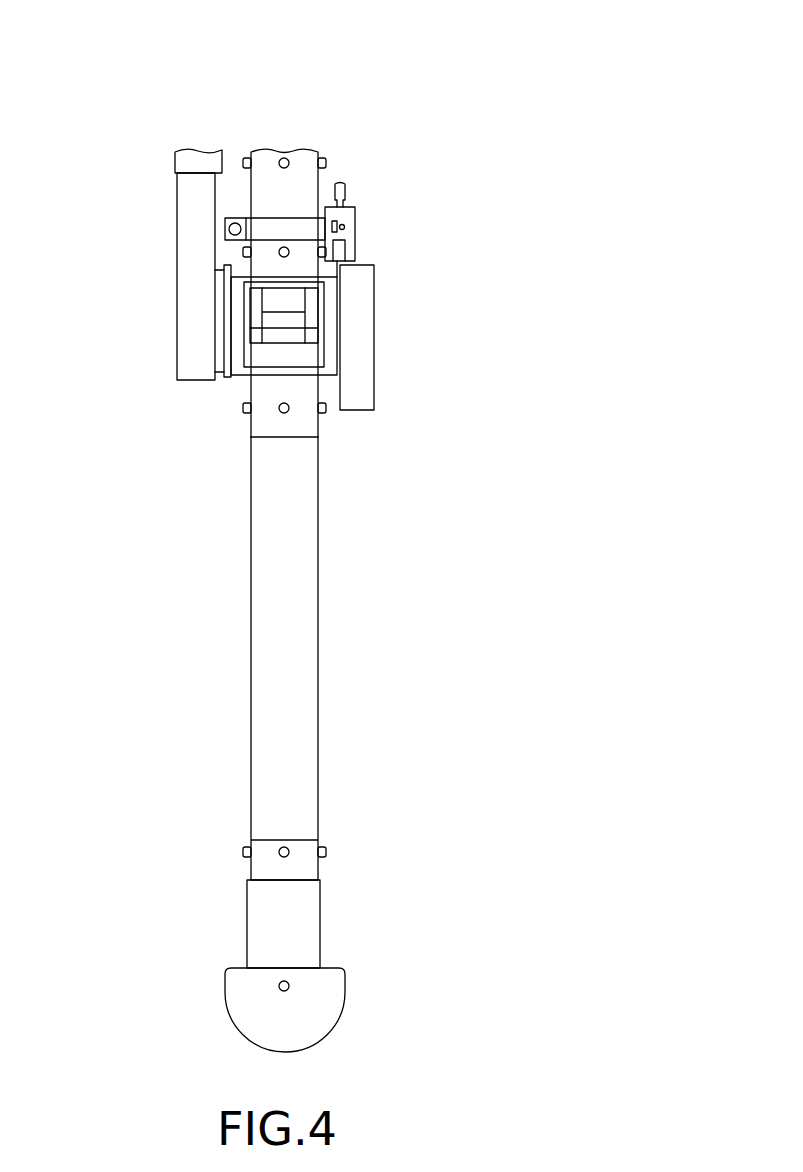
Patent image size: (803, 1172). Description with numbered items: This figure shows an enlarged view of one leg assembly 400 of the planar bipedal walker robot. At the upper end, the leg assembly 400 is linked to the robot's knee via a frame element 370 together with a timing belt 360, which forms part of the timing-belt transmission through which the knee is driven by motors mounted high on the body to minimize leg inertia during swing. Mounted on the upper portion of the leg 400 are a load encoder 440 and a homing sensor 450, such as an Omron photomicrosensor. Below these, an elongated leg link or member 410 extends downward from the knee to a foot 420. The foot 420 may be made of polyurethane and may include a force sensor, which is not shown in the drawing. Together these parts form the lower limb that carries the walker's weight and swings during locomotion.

The leg assembly 400 is at (156, 118).
The frame element 370 is at (312, 145).
The homing sensor 450 is at (360, 208).
The timing belt 360 is at (165, 280).
The load encoder 440 is at (375, 422).
The elongated leg link 410 is at (317, 658).
The foot 420 is at (355, 1018).